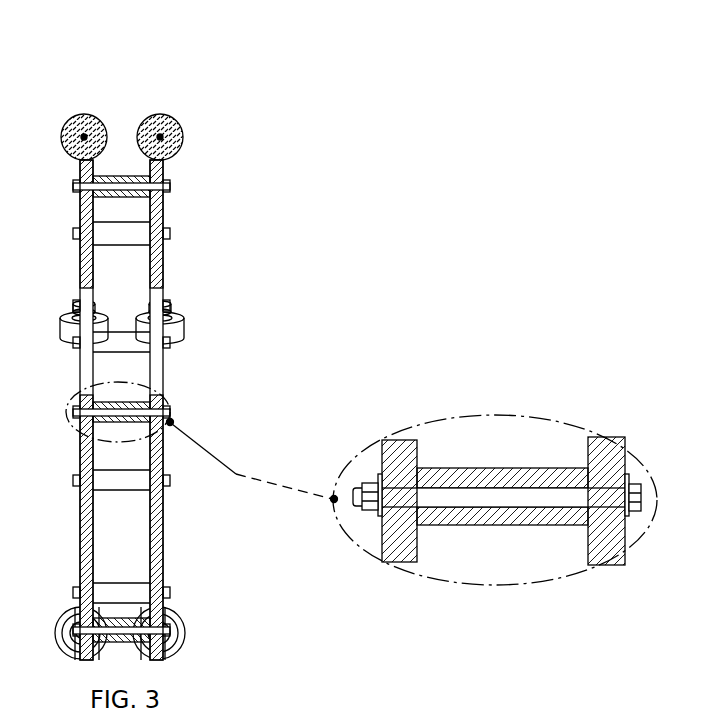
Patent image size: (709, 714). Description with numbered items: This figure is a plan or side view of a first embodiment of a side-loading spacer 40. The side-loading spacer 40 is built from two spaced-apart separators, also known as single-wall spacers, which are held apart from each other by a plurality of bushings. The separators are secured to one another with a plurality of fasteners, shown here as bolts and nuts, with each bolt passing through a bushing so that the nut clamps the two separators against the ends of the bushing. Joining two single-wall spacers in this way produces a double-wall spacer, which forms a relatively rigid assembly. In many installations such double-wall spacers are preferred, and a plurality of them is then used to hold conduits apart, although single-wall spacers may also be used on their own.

The side-loading spacer 40 is at (140, 84).